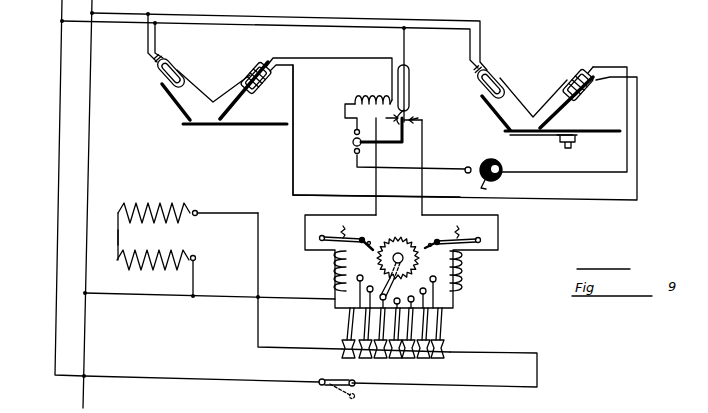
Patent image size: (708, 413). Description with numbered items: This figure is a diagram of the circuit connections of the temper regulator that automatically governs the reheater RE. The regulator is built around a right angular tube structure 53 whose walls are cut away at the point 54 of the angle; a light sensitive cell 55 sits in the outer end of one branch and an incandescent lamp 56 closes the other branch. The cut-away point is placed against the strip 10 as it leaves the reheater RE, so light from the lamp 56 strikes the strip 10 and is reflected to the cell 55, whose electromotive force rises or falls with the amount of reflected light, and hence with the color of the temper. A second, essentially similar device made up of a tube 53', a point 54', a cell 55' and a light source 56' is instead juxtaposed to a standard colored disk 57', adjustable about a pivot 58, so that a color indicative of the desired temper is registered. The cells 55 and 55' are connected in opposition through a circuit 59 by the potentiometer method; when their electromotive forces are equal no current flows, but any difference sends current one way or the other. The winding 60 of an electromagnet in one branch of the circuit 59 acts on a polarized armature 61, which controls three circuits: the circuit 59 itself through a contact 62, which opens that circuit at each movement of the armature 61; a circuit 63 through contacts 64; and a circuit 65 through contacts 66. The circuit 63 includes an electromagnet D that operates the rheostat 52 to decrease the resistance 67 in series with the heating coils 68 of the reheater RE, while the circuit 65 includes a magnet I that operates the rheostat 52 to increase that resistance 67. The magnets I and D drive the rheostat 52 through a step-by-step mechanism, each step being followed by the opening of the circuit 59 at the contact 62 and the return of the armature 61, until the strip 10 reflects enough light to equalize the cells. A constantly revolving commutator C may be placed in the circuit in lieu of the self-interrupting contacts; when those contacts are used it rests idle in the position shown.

The strip 10 is at (222, 125).
The rheostat 52 is at (410, 272).
The right angular tube structure 53 is at (213, 82).
The point of angle 54 is at (220, 91).
The light sensitive cell 55 is at (316, 120).
The incandescent lamp 56 is at (171, 52).
The tube structure 53' is at (533, 97).
The point of angle 54' is at (551, 104).
The light sensitive cell 55' is at (565, 82).
The light source 56' is at (494, 75).
The standard colored disk 57' is at (541, 144).
The pivot 58 is at (577, 146).
The circuit 59 is at (320, 195).
The winding 60 is at (373, 92).
The polarized armature 61 is at (410, 90).
The contact 62 is at (353, 142).
The circuit 63 is at (424, 183).
The contacts 64 is at (418, 118).
The circuit 65 is at (378, 183).
The contacts 66 is at (405, 127).
The resistance 67 is at (396, 353).
The heating coils 68 is at (187, 242).
The reheater RE is at (150, 236).
The magnet I is at (329, 271).
The electromagnet D is at (468, 271).
The commutator C is at (498, 182).